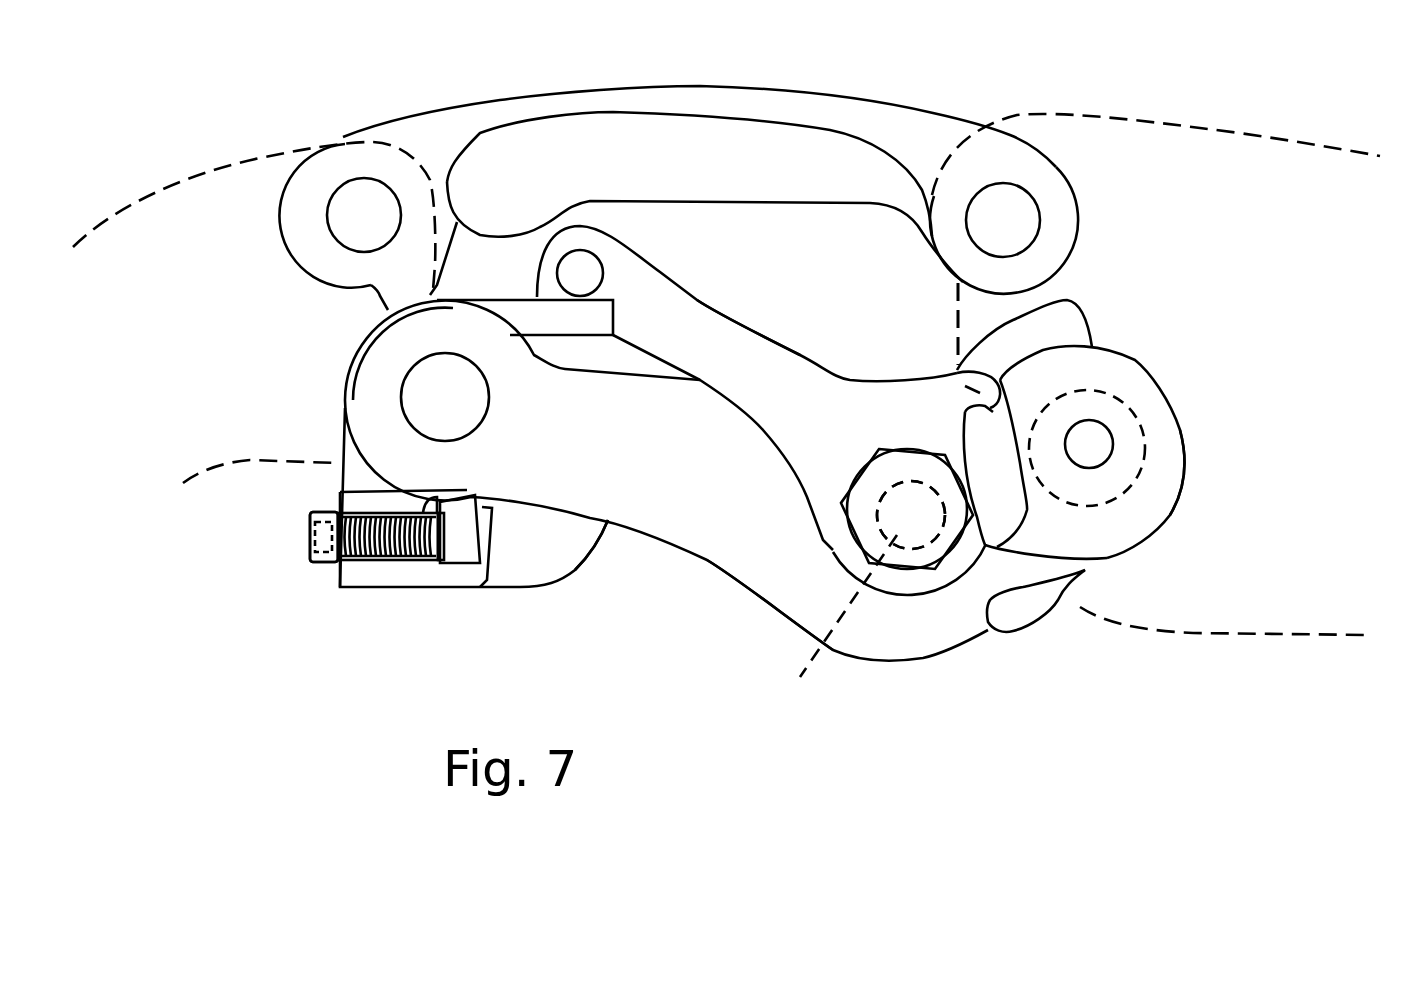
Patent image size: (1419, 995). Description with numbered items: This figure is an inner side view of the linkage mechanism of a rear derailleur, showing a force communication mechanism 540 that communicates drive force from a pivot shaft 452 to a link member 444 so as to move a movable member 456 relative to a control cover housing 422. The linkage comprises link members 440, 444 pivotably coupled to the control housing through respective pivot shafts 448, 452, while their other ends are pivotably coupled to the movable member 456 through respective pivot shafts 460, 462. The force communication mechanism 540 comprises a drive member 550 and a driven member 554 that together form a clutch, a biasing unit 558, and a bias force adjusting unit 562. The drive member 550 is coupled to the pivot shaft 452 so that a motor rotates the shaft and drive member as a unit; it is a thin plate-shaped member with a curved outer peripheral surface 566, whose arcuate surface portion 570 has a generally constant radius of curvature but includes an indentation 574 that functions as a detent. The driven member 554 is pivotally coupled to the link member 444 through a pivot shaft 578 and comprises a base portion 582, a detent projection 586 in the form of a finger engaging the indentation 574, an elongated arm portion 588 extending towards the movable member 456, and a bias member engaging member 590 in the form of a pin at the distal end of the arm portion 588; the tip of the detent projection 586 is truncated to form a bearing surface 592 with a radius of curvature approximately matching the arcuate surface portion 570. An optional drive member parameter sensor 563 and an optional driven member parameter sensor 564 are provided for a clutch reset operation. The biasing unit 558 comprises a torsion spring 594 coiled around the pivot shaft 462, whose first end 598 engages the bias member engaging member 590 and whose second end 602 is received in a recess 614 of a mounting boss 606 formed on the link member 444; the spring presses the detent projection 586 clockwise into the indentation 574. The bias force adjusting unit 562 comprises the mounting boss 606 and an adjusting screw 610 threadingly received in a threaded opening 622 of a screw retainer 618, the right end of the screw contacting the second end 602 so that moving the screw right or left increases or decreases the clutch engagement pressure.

The link member 440 is at (718, 108).
The pivot shaft 448 is at (1023, 213).
The pivot shaft 460 is at (353, 213).
The control cover housing 422 is at (1228, 259).
The movable member 456 is at (78, 328).
The biasing unit 558 is at (356, 318).
The torsion spring 594 is at (357, 363).
The pivot shaft 462 is at (430, 396).
The first end 598 is at (533, 310).
The bias member engaging member 590 is at (585, 268).
The arm portion 588 is at (723, 307).
The force communication mechanism 540 is at (797, 325).
The detent projection 586 is at (957, 363).
The driven member 554 is at (840, 383).
The arcuate surface portion 570 is at (1108, 345).
The drive member 550 is at (1147, 400).
The bearing surface 592 is at (985, 400).
The pivot shaft 578 is at (880, 503).
The drive member parameter sensor 563 is at (1143, 437).
The curved outer peripheral surface 566 is at (1185, 460).
The base portion 582 is at (833, 547).
The indentation 574 is at (1035, 469).
The pivot shaft 452 is at (1092, 447).
The adjusting screw 610 is at (315, 512).
The mounting boss 606 is at (577, 548).
The bias force adjusting unit 562 is at (318, 576).
The screw retainer 618 is at (362, 587).
The recess 614 is at (458, 575).
The second end 602 is at (472, 535).
The link member 444 is at (757, 548).
The driven member parameter sensor 564 is at (829, 625).
The threaded opening 622 is at (413, 553).